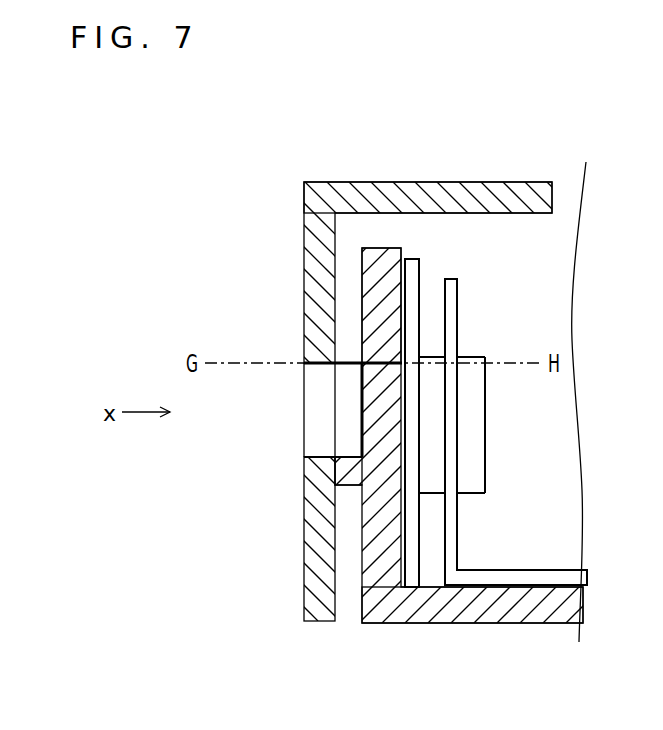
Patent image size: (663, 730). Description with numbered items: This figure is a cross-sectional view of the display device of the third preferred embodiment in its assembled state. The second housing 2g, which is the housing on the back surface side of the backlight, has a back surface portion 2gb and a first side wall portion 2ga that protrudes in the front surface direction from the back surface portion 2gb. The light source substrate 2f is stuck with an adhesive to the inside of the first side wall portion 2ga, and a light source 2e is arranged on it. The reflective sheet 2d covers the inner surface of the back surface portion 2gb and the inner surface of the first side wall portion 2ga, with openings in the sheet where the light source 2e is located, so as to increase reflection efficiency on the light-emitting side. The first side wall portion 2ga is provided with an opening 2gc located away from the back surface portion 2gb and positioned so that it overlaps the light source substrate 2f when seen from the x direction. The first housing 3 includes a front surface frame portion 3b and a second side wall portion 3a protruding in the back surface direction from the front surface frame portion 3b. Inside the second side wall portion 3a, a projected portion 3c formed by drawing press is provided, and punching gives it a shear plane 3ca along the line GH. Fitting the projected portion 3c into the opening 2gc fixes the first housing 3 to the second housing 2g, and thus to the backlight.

The first housing 3 is at (303, 252).
The second side wall portion 3a is at (316, 587).
The front surface frame portion 3b is at (477, 193).
The projected portion 3c is at (355, 428).
The shear plane 3ca is at (378, 372).
The reflective sheet 2d is at (510, 575).
The light source 2e is at (475, 440).
The light source substrate 2f is at (422, 264).
The second housing 2g is at (508, 623).
The first side wall portion 2ga is at (380, 288).
The back surface portion 2gb is at (460, 612).
The opening 2gc is at (359, 491).